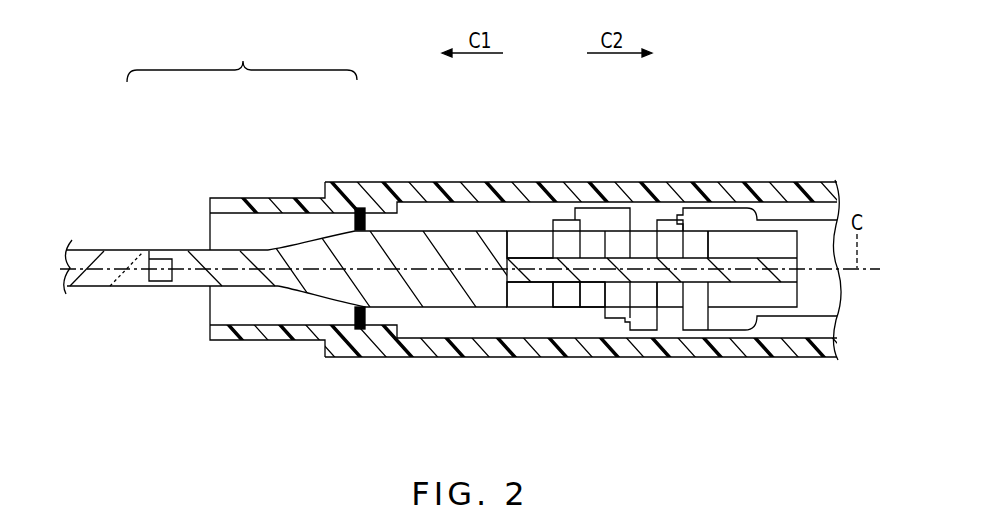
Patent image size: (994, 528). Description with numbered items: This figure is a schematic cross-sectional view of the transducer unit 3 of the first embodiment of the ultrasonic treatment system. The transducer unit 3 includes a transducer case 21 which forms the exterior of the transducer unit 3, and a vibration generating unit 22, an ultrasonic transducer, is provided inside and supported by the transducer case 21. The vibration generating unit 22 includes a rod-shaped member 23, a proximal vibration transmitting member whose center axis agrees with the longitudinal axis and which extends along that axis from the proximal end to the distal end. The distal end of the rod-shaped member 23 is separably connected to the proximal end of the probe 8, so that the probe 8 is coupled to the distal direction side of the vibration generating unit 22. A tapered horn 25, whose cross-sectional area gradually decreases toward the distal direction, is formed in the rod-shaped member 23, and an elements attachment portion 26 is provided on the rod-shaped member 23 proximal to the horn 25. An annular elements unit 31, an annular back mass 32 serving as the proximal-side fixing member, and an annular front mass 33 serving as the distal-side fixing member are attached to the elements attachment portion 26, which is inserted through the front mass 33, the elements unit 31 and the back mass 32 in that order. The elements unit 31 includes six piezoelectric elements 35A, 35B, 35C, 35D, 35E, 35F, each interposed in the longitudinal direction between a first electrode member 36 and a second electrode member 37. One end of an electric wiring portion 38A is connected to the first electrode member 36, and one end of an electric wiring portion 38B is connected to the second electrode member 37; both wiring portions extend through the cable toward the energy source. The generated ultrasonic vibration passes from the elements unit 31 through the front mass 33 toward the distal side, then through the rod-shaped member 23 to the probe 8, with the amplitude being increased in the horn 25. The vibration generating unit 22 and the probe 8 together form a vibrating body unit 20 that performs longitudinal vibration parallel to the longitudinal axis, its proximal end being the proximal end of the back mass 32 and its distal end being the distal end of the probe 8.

The vibrating body unit 20 is at (243, 67).
The probe 8 is at (82, 246).
The vibration generating unit 22 is at (479, 216).
The transducer case 21 is at (549, 190).
The horn 25 is at (317, 250).
The rod-shaped member 23 is at (449, 295).
The transducer unit 3 is at (636, 162).
The elements unit 31 is at (642, 235).
The front mass 33 is at (528, 242).
The elements attachment portion 26 is at (531, 285).
The piezoelectric element 35A is at (565, 296).
The piezoelectric element 35B is at (592, 297).
The piezoelectric element 35C is at (618, 243).
The piezoelectric element 35D is at (643, 295).
The piezoelectric element 35E is at (668, 293).
The piezoelectric element 35F is at (695, 248).
The second electrode member 37 is at (706, 236).
The electric wiring portion 38B is at (772, 218).
The first electrode member 36 is at (722, 330).
The electric wiring portion 38A is at (787, 317).
The back mass 32 is at (786, 245).